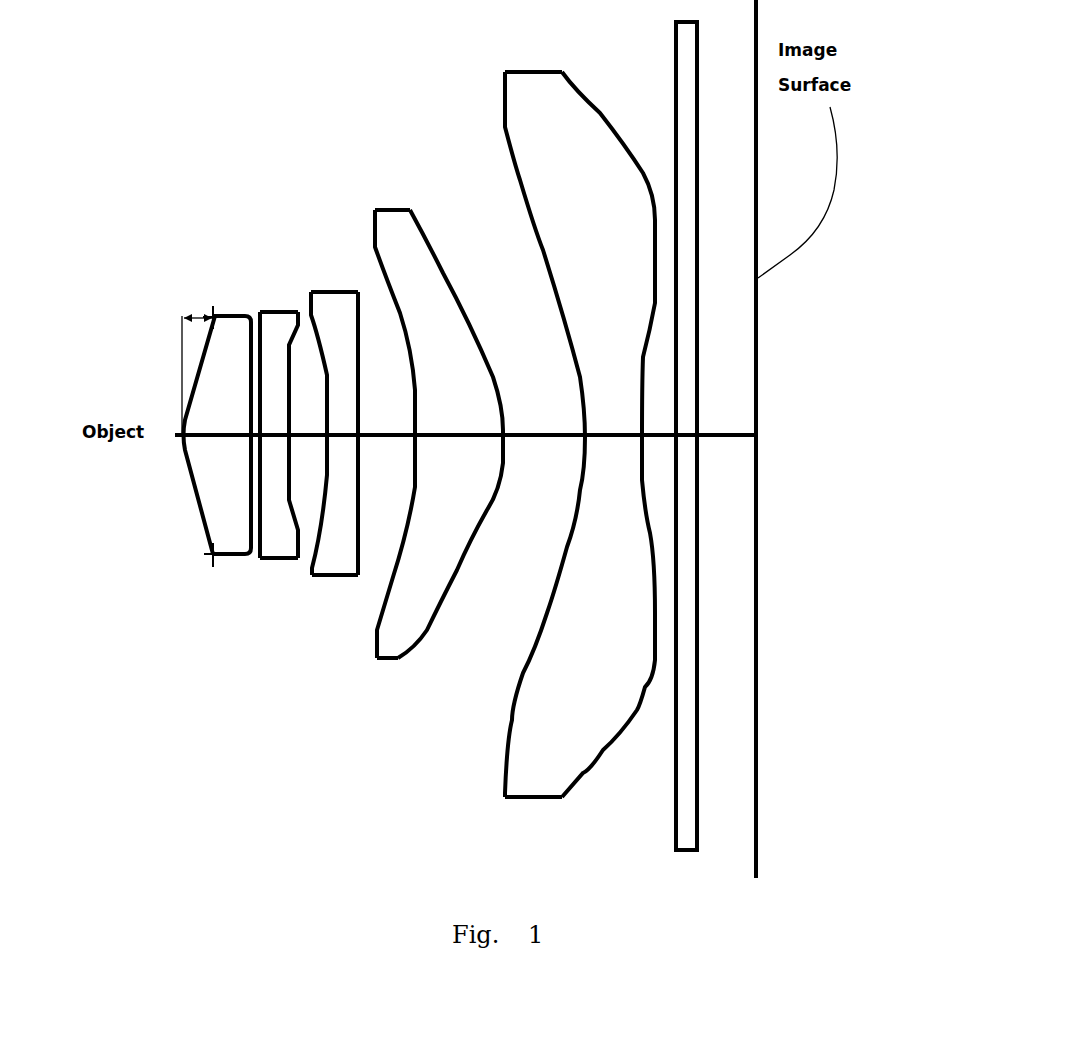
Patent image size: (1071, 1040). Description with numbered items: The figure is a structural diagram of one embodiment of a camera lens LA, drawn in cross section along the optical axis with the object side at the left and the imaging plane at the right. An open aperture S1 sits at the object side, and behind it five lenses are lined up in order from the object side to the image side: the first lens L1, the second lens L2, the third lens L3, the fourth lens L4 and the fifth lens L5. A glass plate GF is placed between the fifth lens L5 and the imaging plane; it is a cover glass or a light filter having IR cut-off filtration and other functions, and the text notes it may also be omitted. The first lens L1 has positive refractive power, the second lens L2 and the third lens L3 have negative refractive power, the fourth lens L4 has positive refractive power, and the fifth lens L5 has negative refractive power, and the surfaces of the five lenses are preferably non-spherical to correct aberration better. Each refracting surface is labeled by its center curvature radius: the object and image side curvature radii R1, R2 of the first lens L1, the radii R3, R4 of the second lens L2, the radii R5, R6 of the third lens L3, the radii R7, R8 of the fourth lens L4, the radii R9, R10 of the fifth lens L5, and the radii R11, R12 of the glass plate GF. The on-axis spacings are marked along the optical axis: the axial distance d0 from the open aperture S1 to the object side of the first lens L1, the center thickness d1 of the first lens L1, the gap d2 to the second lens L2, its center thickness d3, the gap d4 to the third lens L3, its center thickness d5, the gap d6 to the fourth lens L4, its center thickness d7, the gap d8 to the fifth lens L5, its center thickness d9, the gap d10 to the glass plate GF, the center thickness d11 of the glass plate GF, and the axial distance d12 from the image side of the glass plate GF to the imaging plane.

The camera lens LA is at (229, 131).
The open aperture S1 is at (211, 314).
The first lens L1 is at (184, 484).
The second lens L2 is at (256, 468).
The third lens L3 is at (325, 492).
The fourth lens L4 is at (439, 459).
The fifth lens L5 is at (544, 451).
The glass plate GF is at (682, 456).
The object side curvature radius of the first lens R1 is at (249, 457).
The image side curvature radius of the first lens R2 is at (248, 462).
The object side curvature radius of the second lens R3 is at (257, 457).
The image side curvature radius of the second lens R4 is at (288, 470).
The object side curvature radius of the third lens R5 is at (324, 470).
The image side curvature radius of the third lens R6 is at (355, 470).
The object side curvature radius of the fourth lens R7 is at (393, 577).
The image side curvature radius of the fourth lens R8 is at (497, 487).
The object side curvature radius of the fifth lens R9 is at (580, 557).
The image side curvature radius of the fifth lens R10 is at (643, 527).
The object side curvature radius of the glass plate R11 is at (672, 660).
The image side curvature radius of the glass plate R12 is at (705, 657).
The axial distance from the open aperture to the object side of the first lens d0 is at (189, 316).
The center thickness of the first lens d1 is at (216, 418).
The axial distance between the first lens and the second lens d2 is at (252, 400).
The center thickness of the second lens d3 is at (273, 418).
The axial distance between the second lens and the third lens d4 is at (308, 418).
The center thickness of the third lens d5 is at (341, 418).
The axial distance between the third lens and the fourth lens d6 is at (383, 418).
The center thickness of the fourth lens d7 is at (458, 418).
The axial distance between the fourth lens and the fifth lens d8 is at (549, 418).
The center thickness of the fifth lens d9 is at (609, 418).
The axial distance between the fifth lens and the glass plate d10 is at (660, 433).
The center thickness of the glass plate d11 is at (690, 433).
The axial distance from the glass plate to the imaging plane d12 is at (725, 418).